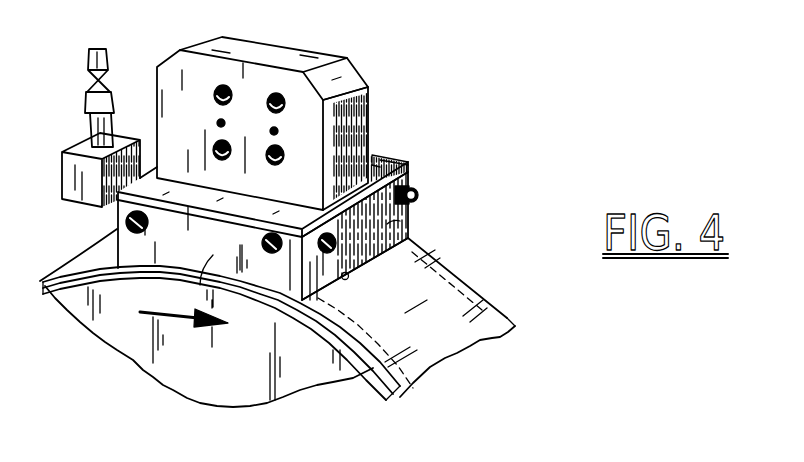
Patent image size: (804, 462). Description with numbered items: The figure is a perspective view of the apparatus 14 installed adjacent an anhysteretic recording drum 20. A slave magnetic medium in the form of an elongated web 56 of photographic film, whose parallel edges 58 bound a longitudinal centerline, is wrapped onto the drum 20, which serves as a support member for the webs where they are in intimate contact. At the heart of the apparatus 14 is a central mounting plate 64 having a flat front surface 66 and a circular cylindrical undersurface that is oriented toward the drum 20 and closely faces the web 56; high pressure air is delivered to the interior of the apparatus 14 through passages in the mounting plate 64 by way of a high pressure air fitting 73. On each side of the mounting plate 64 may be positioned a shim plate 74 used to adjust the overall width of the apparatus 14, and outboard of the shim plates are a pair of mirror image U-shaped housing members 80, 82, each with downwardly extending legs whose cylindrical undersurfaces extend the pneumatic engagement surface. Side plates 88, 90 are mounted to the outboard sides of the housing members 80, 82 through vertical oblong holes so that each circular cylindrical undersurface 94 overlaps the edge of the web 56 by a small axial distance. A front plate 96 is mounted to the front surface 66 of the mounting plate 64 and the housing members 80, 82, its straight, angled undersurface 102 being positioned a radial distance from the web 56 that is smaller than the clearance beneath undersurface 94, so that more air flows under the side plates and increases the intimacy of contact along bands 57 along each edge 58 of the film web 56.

The apparatus 14 is at (412, 136).
The drum 20 is at (313, 380).
The web 56 is at (510, 318).
The bands 57 is at (502, 292).
The edges 58 is at (465, 275).
The central mounting plate 64 is at (290, 44).
The flat front surface 66 is at (372, 95).
The high pressure air fitting 73 is at (88, 100).
The shim plate 74 is at (267, 200).
The housing member 80 is at (171, 184).
The housing member 82 is at (381, 160).
The side plate 88 is at (184, 306).
The side plate 90 is at (380, 160).
The circular cylindrical undersurface 94 is at (255, 282).
The front plate 96 is at (422, 213).
The straight, angled undersurface 102 is at (345, 279).